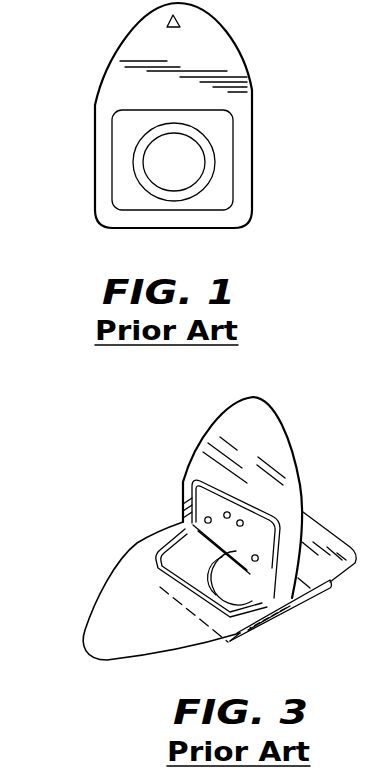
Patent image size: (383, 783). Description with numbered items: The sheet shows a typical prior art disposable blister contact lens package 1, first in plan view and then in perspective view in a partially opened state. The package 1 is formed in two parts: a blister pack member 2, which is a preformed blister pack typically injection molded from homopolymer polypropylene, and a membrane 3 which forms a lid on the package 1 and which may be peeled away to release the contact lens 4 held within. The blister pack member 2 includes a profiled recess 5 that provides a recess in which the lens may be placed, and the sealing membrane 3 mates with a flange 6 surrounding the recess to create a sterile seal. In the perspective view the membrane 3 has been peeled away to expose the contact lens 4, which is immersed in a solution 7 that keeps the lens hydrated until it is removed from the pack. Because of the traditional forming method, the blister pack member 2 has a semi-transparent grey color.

In FIG. 1, the disposable blister contact lens package 1 is at (90, 35).
In FIG. 3, the disposable blister contact lens package 1 is at (345, 515).
In FIG. 1, the blister pack member 2 is at (231, 38).
In FIG. 3, the blister pack member 2 is at (349, 579).
In FIG. 3, the membrane 3 is at (281, 443).
In FIG. 1, the contact lens 4 is at (181, 150).
In FIG. 3, the contact lens 4 is at (220, 588).
In FIG. 1, the profiled recess 5 is at (208, 211).
In FIG. 3, the profiled recess 5 is at (282, 617).
In FIG. 1, the flange 6 is at (238, 156).
In FIG. 3, the flange 6 is at (108, 640).
In FIG. 3, the solution 7 is at (236, 635).